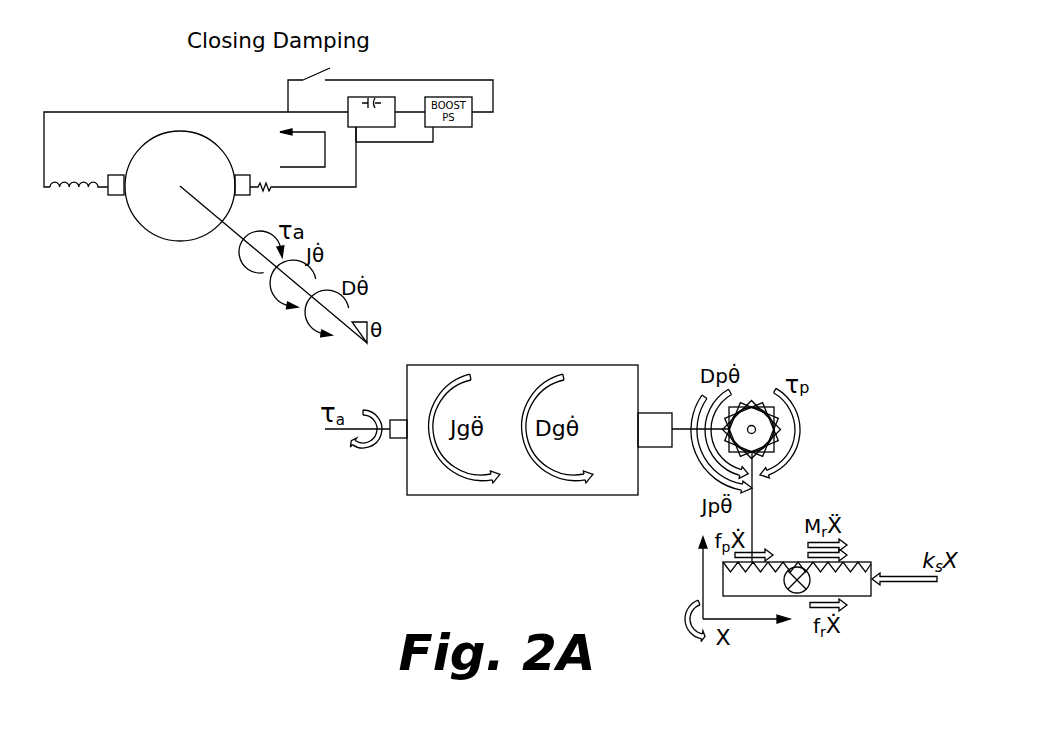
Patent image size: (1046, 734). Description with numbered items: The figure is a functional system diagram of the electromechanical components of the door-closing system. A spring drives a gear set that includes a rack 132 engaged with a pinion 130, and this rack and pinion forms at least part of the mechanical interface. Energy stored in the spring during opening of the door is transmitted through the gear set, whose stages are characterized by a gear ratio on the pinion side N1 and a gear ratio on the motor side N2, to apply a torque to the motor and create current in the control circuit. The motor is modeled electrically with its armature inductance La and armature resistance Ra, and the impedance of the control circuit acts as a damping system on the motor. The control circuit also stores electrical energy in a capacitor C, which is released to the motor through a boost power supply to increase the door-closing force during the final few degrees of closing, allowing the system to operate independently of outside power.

The pinion 130 is at (835, 441).
The rack 132 is at (934, 625).
The motor armature inductance La is at (79, 200).
The armature resistance Ra is at (266, 200).
The capacitance C is at (371, 112).
The gear ratio, pinion side N1 is at (655, 414).
The gear ratio, motor side N2 is at (390, 443).